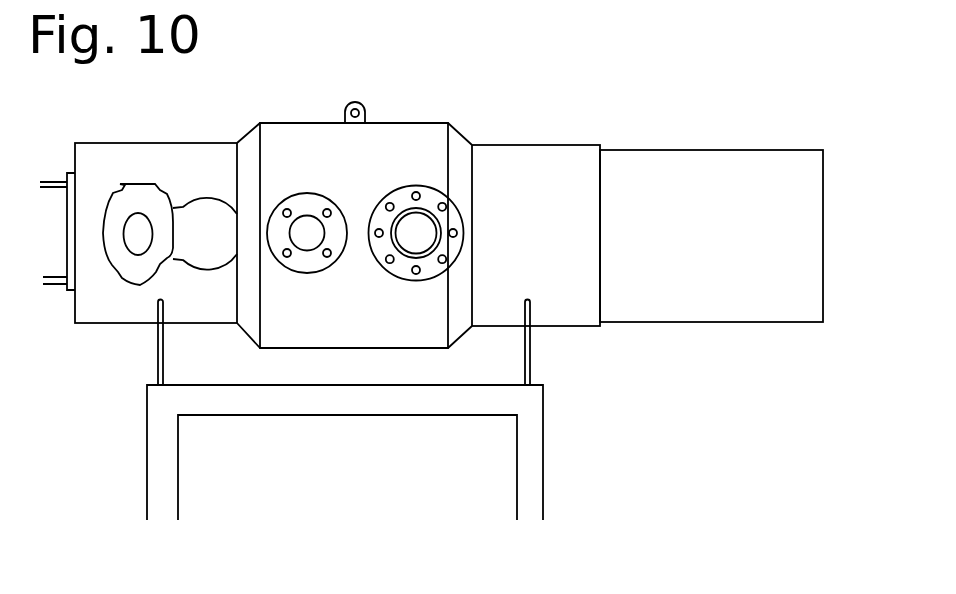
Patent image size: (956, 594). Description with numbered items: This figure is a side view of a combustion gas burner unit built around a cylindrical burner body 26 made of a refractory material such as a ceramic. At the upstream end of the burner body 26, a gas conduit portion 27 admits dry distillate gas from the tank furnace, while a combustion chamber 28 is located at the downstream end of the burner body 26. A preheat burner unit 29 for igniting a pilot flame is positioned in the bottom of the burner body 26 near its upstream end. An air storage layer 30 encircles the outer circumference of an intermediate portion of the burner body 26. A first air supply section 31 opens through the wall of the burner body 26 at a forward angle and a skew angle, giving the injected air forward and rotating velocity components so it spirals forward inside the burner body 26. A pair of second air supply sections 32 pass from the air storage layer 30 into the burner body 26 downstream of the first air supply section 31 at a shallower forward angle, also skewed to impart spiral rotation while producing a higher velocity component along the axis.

The burner body 26 is at (168, 162).
The gas conduit portion 27 is at (300, 410).
The combustion chamber 28 is at (772, 173).
The preheat burner unit 29 is at (133, 233).
The air storage layer 30 is at (410, 147).
The first air supply section 31 is at (308, 227).
The second air supply section 32 is at (422, 228).